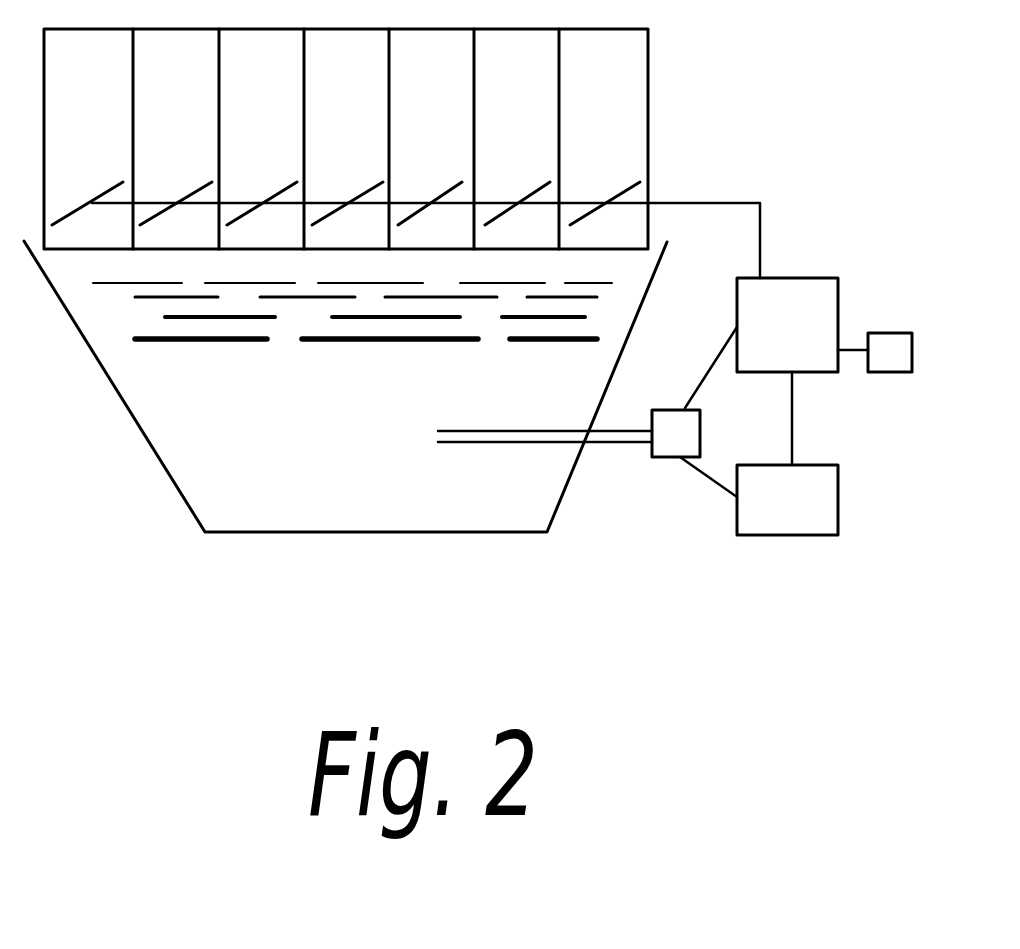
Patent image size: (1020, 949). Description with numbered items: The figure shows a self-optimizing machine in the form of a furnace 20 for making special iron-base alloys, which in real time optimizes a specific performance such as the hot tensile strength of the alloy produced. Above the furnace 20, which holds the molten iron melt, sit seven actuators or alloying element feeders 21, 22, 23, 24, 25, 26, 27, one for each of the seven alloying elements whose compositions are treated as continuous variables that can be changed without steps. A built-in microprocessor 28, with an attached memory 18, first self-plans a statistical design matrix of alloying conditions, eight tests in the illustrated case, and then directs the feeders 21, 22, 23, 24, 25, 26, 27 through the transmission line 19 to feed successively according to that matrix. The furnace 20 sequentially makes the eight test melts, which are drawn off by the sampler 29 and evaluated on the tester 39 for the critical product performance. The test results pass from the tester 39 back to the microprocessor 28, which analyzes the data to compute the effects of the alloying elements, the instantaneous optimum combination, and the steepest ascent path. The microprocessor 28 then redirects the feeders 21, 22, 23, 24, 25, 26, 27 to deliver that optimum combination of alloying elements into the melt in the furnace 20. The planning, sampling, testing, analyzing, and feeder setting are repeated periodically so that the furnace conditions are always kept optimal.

The memory 18 is at (893, 360).
The transmission line 19 is at (710, 203).
The furnace 20 is at (175, 458).
The alloying element feeder 21 is at (104, 194).
The alloying element feeder 22 is at (194, 194).
The alloying element feeder 23 is at (279, 194).
The alloying element feeder 24 is at (364, 194).
The alloying element feeder 25 is at (440, 194).
The alloying element feeder 26 is at (527, 194).
The alloying element feeder 27 is at (615, 194).
The microprocessor 28 is at (823, 290).
The sampler 29 is at (667, 447).
The tester 39 is at (792, 517).